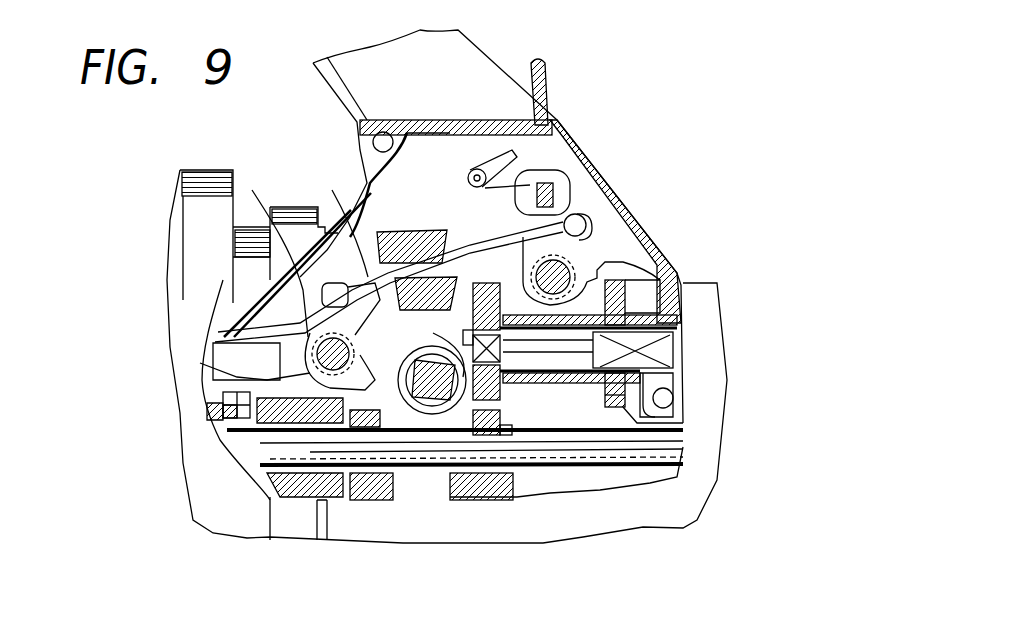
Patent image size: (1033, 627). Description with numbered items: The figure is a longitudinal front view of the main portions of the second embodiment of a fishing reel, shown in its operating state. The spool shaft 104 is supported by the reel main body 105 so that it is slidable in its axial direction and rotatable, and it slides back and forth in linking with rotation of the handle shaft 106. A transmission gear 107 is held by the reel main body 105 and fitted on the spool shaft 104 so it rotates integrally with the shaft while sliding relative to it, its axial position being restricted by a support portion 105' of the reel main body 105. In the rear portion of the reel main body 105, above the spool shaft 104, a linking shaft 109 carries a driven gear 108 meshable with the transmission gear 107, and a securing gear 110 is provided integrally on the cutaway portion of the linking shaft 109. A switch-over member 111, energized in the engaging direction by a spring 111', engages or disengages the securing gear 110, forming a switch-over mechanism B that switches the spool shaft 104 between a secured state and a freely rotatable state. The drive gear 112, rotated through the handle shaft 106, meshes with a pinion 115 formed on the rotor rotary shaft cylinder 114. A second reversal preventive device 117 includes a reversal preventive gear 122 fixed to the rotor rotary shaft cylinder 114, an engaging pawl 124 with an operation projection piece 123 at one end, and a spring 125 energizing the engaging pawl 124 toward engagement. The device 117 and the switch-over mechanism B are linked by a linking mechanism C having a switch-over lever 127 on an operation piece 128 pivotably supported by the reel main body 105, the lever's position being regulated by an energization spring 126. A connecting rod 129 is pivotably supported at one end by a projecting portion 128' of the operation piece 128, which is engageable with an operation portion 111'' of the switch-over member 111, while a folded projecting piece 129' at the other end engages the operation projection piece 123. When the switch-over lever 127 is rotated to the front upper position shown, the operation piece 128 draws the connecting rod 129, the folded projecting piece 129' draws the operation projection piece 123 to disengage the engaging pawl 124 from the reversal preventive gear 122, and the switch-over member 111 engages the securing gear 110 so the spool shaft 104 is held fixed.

The spool shaft 104 is at (277, 330).
The reel main body 105 is at (513, 466).
The support portion 105' is at (468, 538).
The handle shaft 106 is at (360, 385).
The transmission gear 107 is at (480, 500).
The driven gear 108 is at (553, 385).
The linking shaft 109 is at (540, 382).
The securing gear 110 is at (660, 428).
The switch-over member 111 is at (634, 273).
The spring 111' is at (706, 220).
The operation portion 111'' is at (660, 209).
The drive gear 112 is at (250, 450).
The rotor rotary shaft cylinder 114 is at (250, 433).
The pinion 115 is at (223, 392).
The second reversal preventive device 117 is at (230, 310).
The reversal preventive gear 122 is at (213, 397).
The operation projection piece 123 is at (267, 222).
The engaging pawl 124 is at (230, 370).
The spring 125 is at (375, 253).
The energization spring 126 is at (510, 163).
The switch-over lever 127 is at (546, 62).
The operation piece 128 is at (565, 170).
The projecting portion 128' is at (655, 200).
The connecting rod 129 is at (389, 208).
The folded projecting piece 129' is at (325, 269).
The switch-over mechanism B is at (640, 282).
The linking mechanism C is at (458, 240).